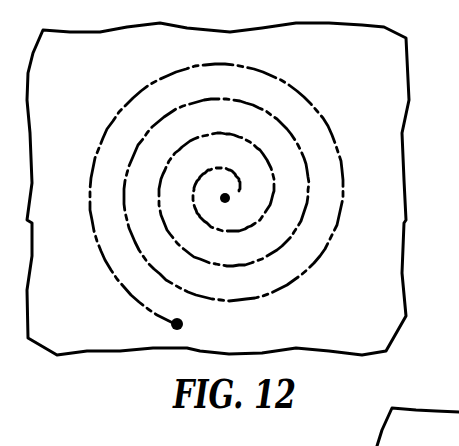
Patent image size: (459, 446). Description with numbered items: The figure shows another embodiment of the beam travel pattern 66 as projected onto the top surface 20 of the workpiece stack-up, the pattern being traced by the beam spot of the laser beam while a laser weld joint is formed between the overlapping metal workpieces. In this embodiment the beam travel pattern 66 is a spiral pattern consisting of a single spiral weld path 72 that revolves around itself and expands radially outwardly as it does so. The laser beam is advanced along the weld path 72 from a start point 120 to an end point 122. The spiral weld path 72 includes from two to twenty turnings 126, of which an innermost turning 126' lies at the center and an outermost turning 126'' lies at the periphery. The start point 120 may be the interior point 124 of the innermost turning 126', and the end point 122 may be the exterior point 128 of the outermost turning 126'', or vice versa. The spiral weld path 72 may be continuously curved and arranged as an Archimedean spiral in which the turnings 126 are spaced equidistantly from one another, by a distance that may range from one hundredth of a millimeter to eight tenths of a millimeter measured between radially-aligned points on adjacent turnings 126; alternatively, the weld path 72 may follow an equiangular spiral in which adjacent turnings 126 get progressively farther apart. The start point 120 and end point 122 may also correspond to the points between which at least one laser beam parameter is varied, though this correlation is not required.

The top surface 20 is at (345, 328).
The start point 120 is at (224, 196).
The end point 122 is at (172, 331).
The interior point 124 is at (228, 200).
The turnings 126 is at (141, 121).
The innermost turning 126' is at (317, 215).
The outermost turning 126'' is at (65, 270).
The exterior point 128 is at (171, 325).
The beam travel pattern 66 is at (346, 145).
The weld path 72 is at (316, 103).